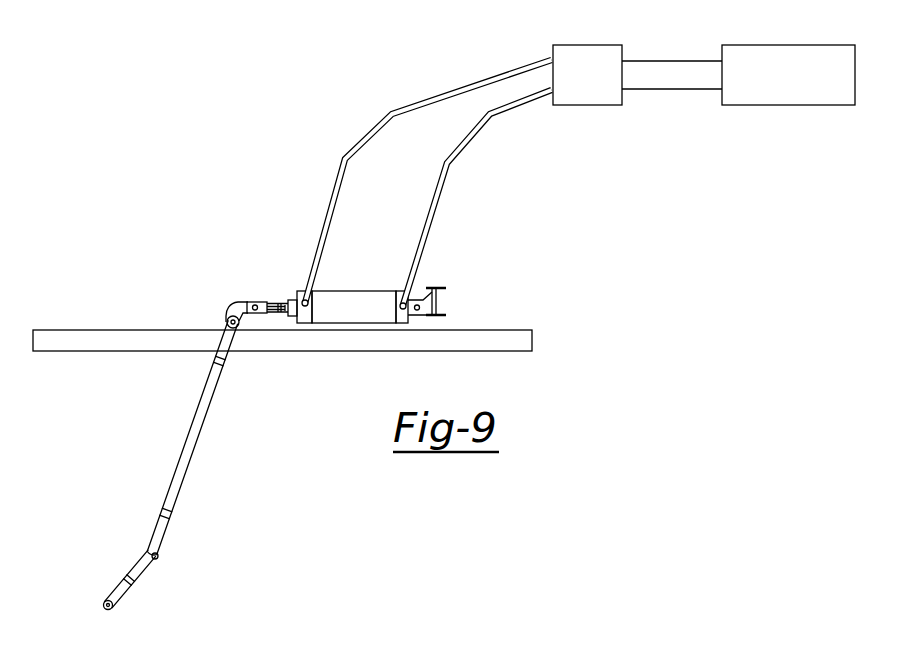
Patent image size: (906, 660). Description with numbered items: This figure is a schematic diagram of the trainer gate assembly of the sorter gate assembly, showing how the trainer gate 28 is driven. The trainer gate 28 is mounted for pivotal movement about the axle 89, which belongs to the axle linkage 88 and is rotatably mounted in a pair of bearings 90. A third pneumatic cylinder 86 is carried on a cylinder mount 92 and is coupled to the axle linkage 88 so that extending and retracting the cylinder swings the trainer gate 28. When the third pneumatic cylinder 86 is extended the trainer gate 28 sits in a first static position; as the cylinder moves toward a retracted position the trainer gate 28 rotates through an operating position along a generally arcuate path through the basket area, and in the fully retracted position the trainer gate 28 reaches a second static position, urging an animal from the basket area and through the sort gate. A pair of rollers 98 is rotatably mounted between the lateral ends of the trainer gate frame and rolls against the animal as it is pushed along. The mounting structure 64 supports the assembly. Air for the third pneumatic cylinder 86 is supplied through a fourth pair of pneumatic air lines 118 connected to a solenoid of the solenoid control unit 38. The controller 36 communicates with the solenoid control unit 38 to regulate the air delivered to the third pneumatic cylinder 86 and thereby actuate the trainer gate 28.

The trainer gate 28 is at (193, 462).
The controller 36 is at (787, 105).
The solenoid control unit 38 is at (587, 105).
The frame plate 64 is at (508, 329).
The third pneumatic cylinder 86 is at (353, 323).
The axle linkage 88 is at (250, 298).
The axle 89 is at (228, 318).
The bearings 90 is at (237, 328).
The cylinder mount 92 is at (435, 287).
The rollers 98 is at (110, 607).
The fourth pair of pneumatic air lines 118 is at (445, 160).